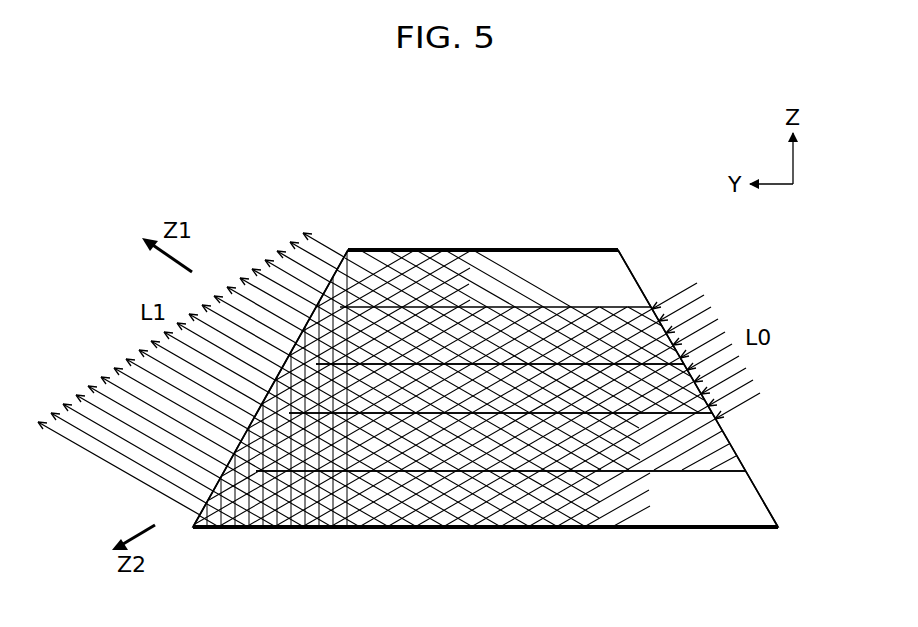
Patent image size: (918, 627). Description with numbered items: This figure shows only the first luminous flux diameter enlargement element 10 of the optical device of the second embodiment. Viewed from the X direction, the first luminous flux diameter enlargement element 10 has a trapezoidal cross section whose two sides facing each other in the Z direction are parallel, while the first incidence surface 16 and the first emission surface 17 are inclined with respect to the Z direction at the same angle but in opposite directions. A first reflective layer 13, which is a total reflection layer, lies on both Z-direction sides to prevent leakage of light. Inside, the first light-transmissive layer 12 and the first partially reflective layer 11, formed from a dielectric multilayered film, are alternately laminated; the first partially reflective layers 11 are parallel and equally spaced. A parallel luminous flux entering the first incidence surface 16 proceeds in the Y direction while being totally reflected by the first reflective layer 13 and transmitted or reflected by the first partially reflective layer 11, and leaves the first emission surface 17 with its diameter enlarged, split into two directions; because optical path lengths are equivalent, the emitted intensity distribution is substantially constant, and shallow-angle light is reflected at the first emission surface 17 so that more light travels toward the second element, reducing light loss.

The first luminous flux diameter enlargement element 10 is at (557, 245).
The first reflective layer 13 is at (418, 248).
The first emission surface 17 is at (347, 262).
The first incidence surface 16 is at (752, 482).
The first partially reflective layer 11 is at (578, 471).
The first light-transmissive layer 12 is at (693, 471).